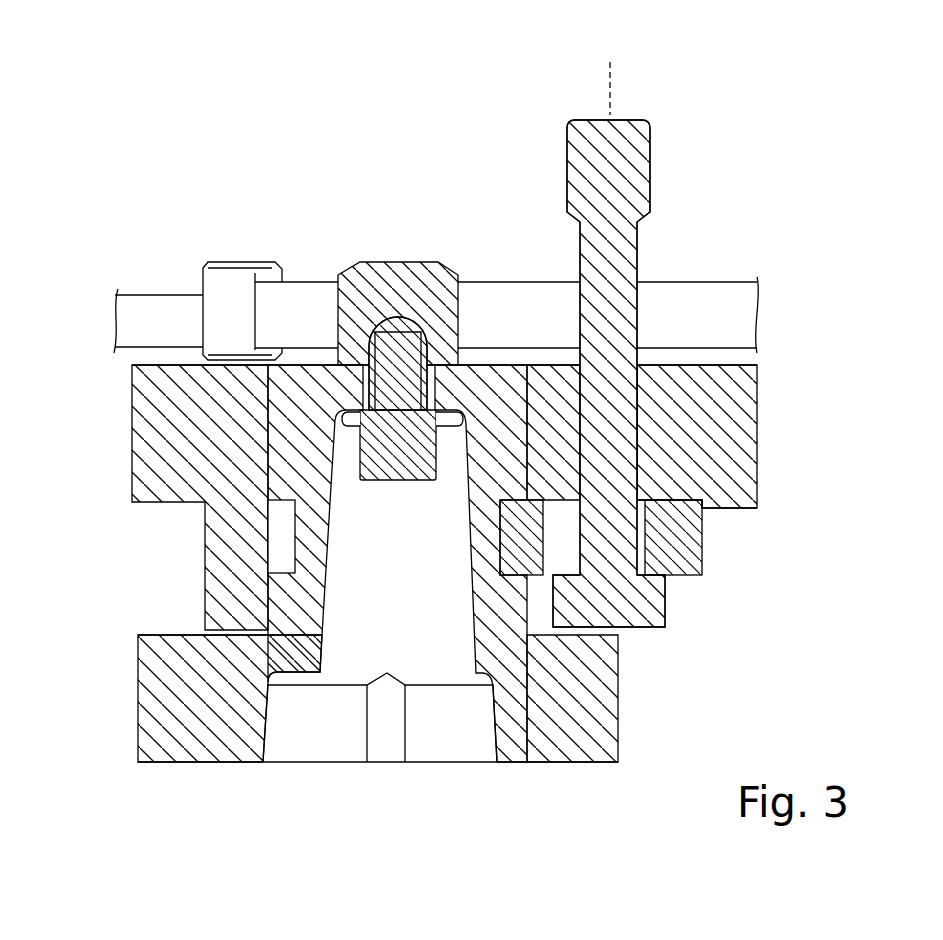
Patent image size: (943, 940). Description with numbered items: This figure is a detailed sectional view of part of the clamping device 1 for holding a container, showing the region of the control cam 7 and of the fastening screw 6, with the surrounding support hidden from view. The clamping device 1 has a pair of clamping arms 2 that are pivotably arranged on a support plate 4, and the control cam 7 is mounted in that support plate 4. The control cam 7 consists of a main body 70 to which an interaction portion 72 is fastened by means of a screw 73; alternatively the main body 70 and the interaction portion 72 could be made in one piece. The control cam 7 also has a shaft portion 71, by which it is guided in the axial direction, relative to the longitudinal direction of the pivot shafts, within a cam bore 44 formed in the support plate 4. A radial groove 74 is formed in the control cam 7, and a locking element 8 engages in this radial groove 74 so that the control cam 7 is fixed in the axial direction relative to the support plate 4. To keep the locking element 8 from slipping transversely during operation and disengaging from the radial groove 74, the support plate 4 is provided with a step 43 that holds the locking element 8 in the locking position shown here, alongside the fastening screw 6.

The clamping device 1 is at (114, 200).
The clamping arm 2 is at (707, 298).
The support plate 4 is at (158, 422).
The fastening screw 6 is at (628, 145).
The control cam 7 is at (155, 738).
The locking element 8 is at (685, 543).
The step 43 is at (695, 502).
The cam bore 44 is at (272, 403).
The main body 70 is at (157, 670).
The shaft portion 71 is at (272, 448).
The interaction portion 72 is at (413, 300).
The screw 73 is at (390, 328).
The radial groove 74 is at (278, 542).